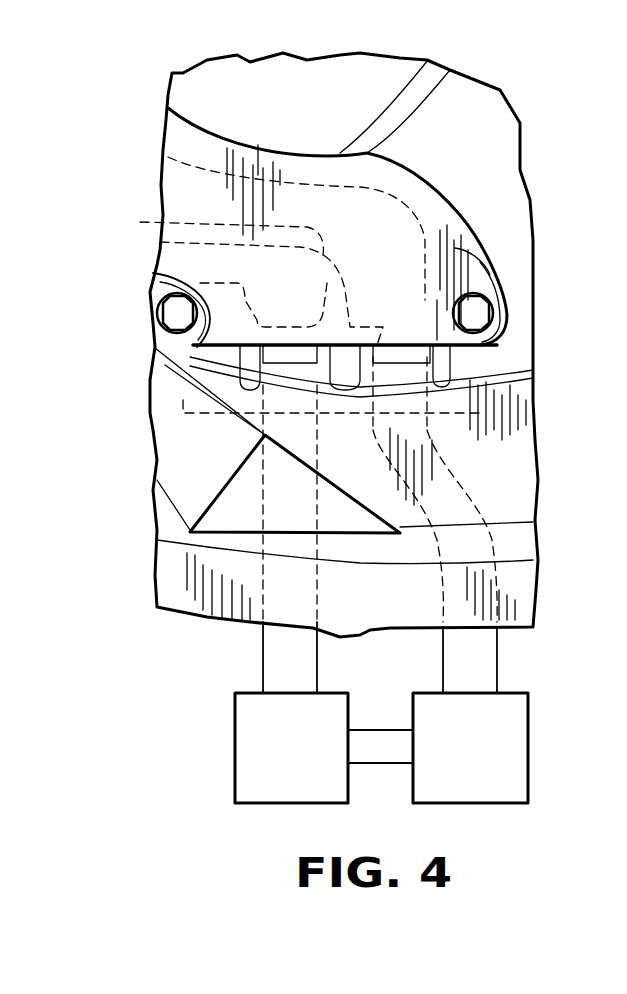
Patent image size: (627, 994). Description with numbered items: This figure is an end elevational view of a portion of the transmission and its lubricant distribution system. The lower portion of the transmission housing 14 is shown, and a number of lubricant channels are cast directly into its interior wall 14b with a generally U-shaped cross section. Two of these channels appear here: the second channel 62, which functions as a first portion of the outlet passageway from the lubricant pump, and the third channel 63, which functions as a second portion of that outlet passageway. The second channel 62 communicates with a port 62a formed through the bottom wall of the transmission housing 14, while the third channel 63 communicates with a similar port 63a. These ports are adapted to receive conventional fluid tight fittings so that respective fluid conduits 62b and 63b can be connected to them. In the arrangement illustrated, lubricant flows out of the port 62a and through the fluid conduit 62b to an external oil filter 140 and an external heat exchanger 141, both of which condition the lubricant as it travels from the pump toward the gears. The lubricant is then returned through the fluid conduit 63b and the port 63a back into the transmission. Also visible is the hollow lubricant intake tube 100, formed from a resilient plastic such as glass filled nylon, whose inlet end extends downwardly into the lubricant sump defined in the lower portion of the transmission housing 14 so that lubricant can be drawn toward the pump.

The transmission housing 14 is at (180, 593).
The interior wall 14b is at (503, 132).
The second channel 62 is at (210, 258).
The port 62a is at (287, 353).
The fluid conduit 62b is at (273, 657).
The third channel 63 is at (337, 200).
The port 63a is at (407, 357).
The fluid conduit 63b is at (483, 663).
The lubricant intake tube 100 is at (180, 470).
The external oil filter 140 is at (324, 748).
The external heat exchanger 141 is at (470, 748).